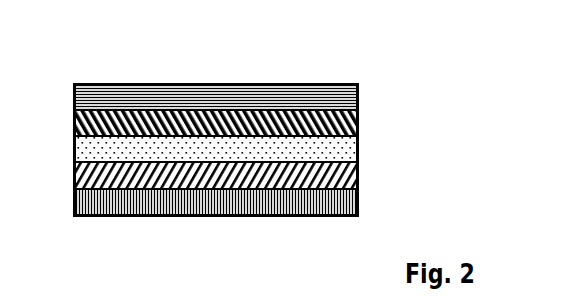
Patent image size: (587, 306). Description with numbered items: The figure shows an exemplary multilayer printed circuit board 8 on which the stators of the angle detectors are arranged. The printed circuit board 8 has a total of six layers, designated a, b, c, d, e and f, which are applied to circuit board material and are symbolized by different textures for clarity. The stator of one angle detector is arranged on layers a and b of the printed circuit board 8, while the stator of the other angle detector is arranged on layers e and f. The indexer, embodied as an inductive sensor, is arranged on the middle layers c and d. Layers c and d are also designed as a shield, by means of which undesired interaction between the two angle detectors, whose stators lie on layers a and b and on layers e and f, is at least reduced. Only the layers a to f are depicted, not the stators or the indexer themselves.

The multilayer printed circuit board 8 is at (362, 56).
The layer a is at (358, 84).
The layer b is at (358, 110).
The layer c is at (358, 135).
The layer d is at (358, 162).
The layer e is at (358, 190).
The layer f is at (358, 217).